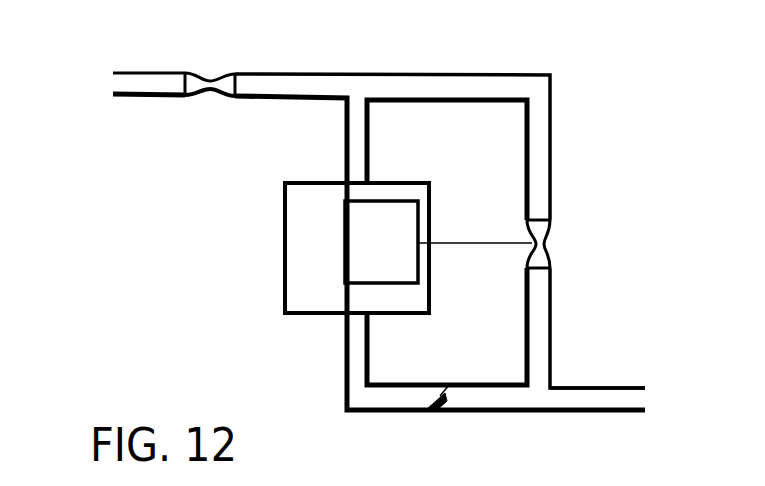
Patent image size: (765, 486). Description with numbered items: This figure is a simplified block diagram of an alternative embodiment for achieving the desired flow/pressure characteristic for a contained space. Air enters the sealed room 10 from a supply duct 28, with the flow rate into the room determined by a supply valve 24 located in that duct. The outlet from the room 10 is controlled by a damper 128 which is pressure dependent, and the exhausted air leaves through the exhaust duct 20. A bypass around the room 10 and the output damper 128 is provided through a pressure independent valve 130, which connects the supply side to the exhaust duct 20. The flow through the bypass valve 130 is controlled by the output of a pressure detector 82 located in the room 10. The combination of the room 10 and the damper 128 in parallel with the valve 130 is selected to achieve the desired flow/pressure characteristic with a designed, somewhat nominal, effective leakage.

The duct 28 is at (138, 70).
The supply valve 24 is at (210, 74).
The sealed room 10 is at (285, 254).
The pressure detector 82 is at (345, 267).
The pressure independent valve 130 is at (547, 253).
The duct 20 is at (593, 390).
The damper 128 is at (444, 413).